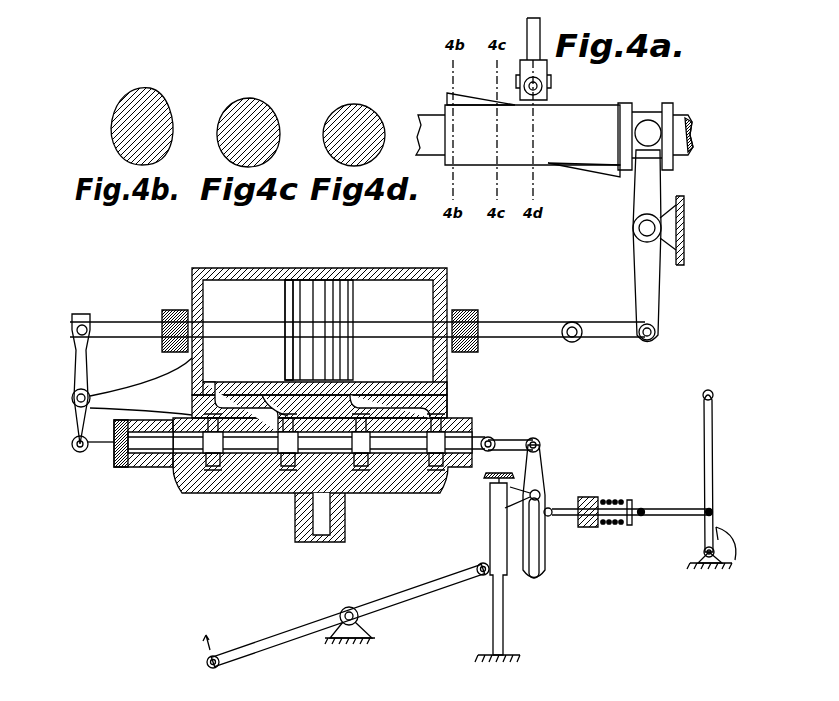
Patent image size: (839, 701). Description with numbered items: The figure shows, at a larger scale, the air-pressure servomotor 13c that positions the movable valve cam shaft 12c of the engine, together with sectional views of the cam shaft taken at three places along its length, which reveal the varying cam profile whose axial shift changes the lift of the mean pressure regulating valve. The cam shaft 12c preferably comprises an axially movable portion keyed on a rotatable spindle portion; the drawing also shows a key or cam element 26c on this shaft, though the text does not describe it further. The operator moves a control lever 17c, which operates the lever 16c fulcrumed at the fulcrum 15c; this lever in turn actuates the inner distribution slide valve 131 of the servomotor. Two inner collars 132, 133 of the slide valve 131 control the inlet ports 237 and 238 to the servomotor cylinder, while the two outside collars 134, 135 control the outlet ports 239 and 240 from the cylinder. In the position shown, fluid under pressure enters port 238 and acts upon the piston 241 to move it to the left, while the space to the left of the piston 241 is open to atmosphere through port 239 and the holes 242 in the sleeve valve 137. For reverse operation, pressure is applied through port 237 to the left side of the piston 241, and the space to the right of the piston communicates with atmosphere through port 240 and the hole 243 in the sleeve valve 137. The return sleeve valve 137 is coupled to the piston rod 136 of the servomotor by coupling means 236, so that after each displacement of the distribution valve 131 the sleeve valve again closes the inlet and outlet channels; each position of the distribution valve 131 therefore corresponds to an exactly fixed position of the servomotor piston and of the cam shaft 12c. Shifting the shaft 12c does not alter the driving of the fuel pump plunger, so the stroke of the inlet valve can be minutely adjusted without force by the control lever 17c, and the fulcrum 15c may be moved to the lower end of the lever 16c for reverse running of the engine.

The cam shaft 12c is at (683, 122).
The servomotor 13c is at (310, 272).
The fulcrum 15c is at (540, 500).
The lever 16c is at (546, 562).
The control lever 17c is at (708, 478).
The cam key 26c is at (470, 100).
The distribution slide valve 131 is at (460, 440).
The inner collar 132 is at (275, 465).
The inner collar 133 is at (360, 455).
The outside collar 134 is at (200, 492).
The outside collar 135 is at (445, 470).
The piston rod 136 is at (250, 330).
The sleeve valve 137 is at (150, 466).
The coupling means 236 is at (70, 362).
The inlet port 237 is at (280, 415).
The inlet port 238 is at (365, 415).
The outlet port 239 is at (205, 437).
The outlet port 240 is at (450, 418).
The piston 241 is at (285, 292).
The holes 242 is at (118, 468).
The hole 243 is at (500, 445).